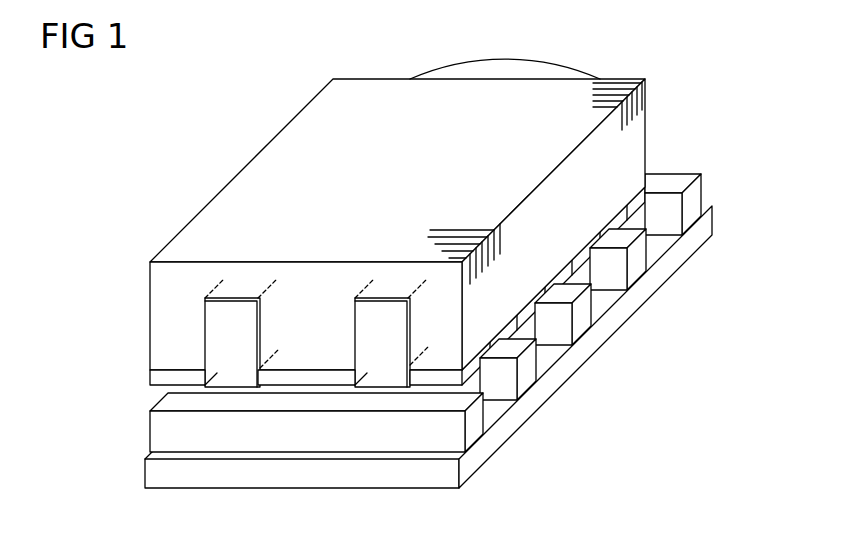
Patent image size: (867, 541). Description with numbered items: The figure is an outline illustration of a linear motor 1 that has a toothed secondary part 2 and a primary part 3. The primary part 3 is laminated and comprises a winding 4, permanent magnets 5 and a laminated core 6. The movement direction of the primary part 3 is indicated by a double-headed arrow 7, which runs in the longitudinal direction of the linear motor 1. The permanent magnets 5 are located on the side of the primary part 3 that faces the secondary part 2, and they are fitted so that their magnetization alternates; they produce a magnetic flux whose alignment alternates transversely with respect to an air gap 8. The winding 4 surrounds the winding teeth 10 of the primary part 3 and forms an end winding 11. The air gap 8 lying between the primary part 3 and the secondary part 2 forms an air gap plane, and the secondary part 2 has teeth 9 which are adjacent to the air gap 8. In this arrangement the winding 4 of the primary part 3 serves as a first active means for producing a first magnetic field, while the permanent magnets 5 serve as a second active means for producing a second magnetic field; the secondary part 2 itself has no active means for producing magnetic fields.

The linear motor 1 is at (441, 270).
The secondary part 2 is at (457, 354).
The primary part 3 is at (388, 193).
The winding 4 is at (403, 312).
The permanent magnets 5 is at (150, 377).
The laminated core 6 is at (630, 80).
The double-headed arrow 7 is at (302, 484).
The air gap 8 is at (187, 390).
The teeth 9 is at (529, 380).
The winding teeth 10 is at (157, 323).
The end winding 11 is at (501, 68).